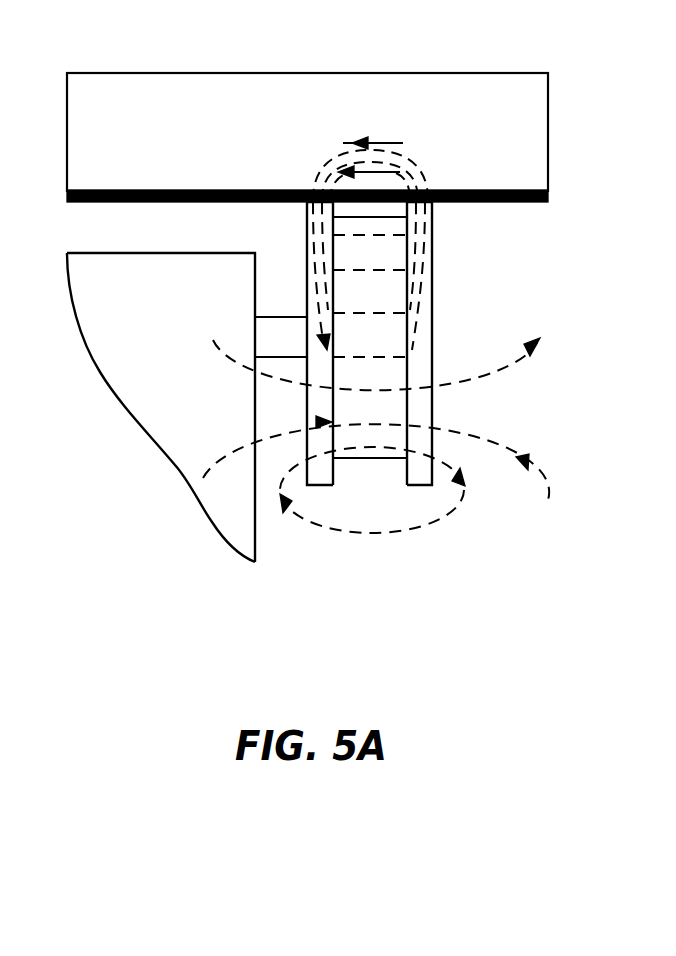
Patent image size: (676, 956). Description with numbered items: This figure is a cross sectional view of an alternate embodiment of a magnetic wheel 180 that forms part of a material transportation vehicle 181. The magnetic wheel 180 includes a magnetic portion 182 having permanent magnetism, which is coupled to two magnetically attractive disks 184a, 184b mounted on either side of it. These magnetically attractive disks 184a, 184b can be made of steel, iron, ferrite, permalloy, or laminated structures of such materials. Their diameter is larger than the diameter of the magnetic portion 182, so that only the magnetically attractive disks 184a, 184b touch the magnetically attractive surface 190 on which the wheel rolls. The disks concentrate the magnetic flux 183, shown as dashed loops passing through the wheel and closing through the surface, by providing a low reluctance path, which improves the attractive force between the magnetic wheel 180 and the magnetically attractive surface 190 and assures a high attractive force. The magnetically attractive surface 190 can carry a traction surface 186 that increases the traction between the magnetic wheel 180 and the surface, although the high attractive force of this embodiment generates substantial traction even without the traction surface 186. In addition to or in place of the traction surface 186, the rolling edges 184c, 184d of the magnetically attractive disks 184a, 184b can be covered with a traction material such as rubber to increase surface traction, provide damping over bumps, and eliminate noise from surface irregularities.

The magnetic wheel 180 is at (522, 218).
The material transportation vehicle 181 is at (195, 485).
The magnetic portion 182 is at (362, 460).
The magnetic flux 183 is at (400, 140).
The magnetically attractive disk 184a is at (335, 480).
The magnetically attractive disk 184b is at (433, 483).
The rolling edge 184c is at (316, 487).
The rolling edge 184d is at (420, 488).
The traction surface 186 is at (500, 201).
The magnetically attractive surface 190 is at (548, 167).